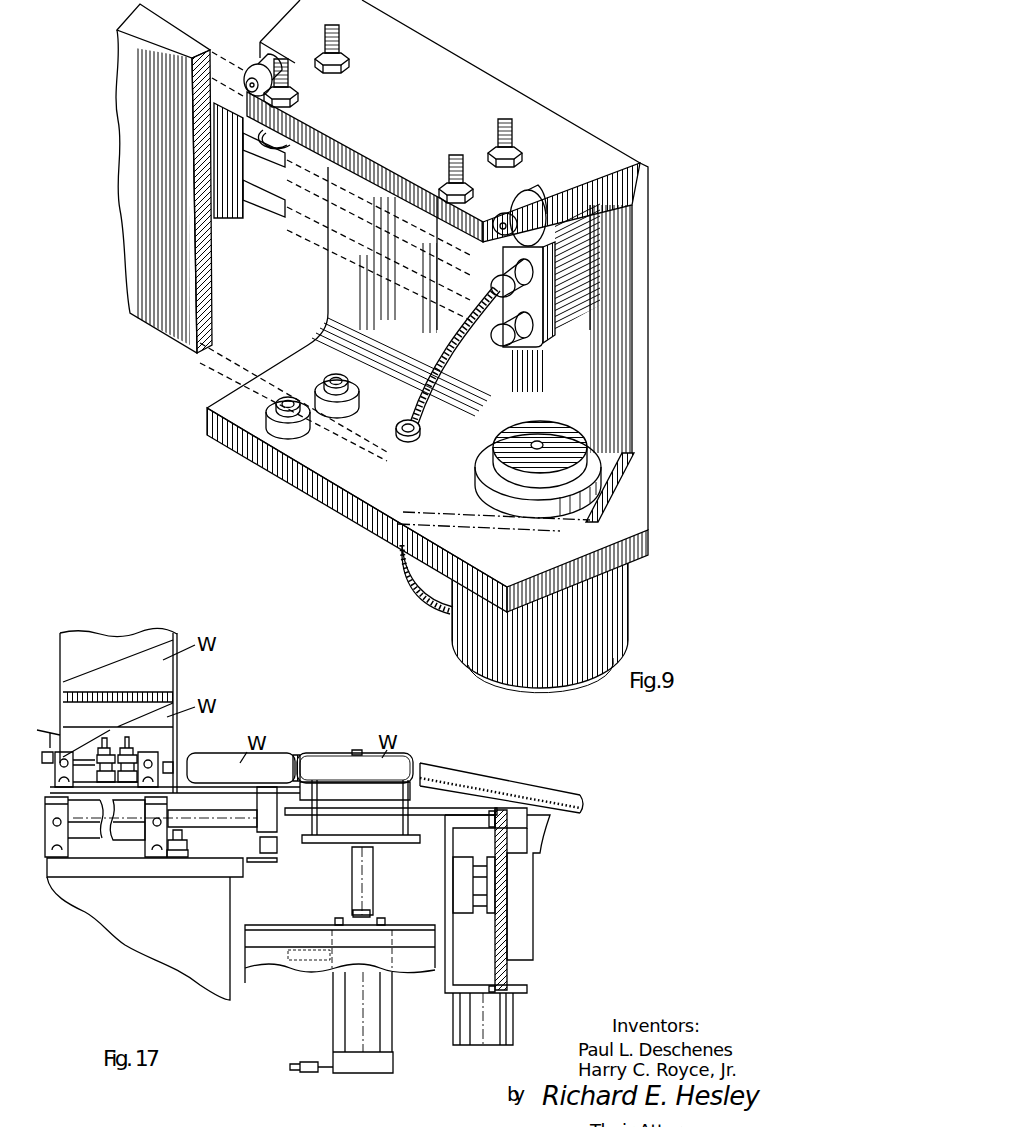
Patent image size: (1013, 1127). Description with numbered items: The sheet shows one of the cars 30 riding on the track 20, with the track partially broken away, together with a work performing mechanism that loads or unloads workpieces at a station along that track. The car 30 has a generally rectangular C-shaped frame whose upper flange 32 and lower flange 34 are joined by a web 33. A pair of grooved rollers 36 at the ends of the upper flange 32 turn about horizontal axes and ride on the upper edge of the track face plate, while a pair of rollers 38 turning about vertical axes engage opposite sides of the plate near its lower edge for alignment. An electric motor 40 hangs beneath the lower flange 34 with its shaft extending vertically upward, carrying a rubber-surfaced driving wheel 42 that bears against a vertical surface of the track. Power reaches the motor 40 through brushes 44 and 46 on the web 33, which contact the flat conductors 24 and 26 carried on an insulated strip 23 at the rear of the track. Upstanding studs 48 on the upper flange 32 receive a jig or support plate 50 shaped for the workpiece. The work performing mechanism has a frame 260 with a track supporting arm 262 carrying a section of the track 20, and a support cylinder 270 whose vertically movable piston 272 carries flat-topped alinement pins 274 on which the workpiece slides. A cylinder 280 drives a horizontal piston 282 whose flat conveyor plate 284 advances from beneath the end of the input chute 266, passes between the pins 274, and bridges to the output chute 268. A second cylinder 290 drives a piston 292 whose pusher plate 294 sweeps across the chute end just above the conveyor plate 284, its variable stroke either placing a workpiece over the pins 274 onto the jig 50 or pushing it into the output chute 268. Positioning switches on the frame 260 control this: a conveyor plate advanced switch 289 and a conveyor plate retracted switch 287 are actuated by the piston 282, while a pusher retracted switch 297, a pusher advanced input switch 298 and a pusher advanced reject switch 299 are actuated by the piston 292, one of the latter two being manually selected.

In FIG. 9, the track 20 is at (155, 343).
In FIG. 17, the track 20 is at (510, 972).
In FIG. 9, the insulated strip 23 is at (227, 200).
In FIG. 9, the flat conductor 24 is at (276, 165).
In FIG. 9, the flat conductor 26 is at (274, 214).
In FIG. 9, the car 30 is at (459, 306).
In FIG. 17, the car 30 is at (517, 820).
In FIG. 9, the upper flange 32 is at (613, 160).
In FIG. 9, the web 33 is at (641, 403).
In FIG. 9, the lower flange 34 is at (388, 498).
In FIG. 9, the grooved roller 36 is at (248, 62).
In FIG. 9, the roller 38 is at (304, 437).
In FIG. 9, the electric motor 40 is at (610, 597).
In FIG. 9, the driving wheel 42 is at (492, 491).
In FIG. 9, the brush 44 is at (493, 293).
In FIG. 9, the brush 46 is at (523, 343).
In FIG. 9, the stud 48 is at (497, 145).
In FIG. 17, the support plate 50 is at (433, 808).
In FIG. 17, the frame 260 is at (199, 958).
In FIG. 17, the track supporting arm 262 is at (540, 895).
In FIG. 17, the input chute 266 is at (182, 680).
In FIG. 17, the output chute 268 is at (507, 785).
In FIG. 17, the support cylinder 270 is at (353, 1032).
In FIG. 17, the piston 272 is at (357, 917).
In FIG. 17, the alinement pin 274 is at (323, 822).
In FIG. 17, the cylinder 280 is at (130, 825).
In FIG. 17, the piston 282 is at (195, 822).
In FIG. 17, the conveyor plate 284 is at (342, 782).
In FIG. 17, the conveyor plate retracted switch 287 is at (177, 860).
In FIG. 17, the conveyor plate advanced switch 289 is at (278, 850).
In FIG. 17, the cylinder 290 is at (80, 767).
In FIG. 17, the piston 292 is at (163, 775).
In FIG. 17, the pusher plate 294 is at (177, 765).
In FIG. 17, the pusher retracted switch 297 is at (43, 753).
In FIG. 17, the pusher advanced (input) switch 298 is at (100, 753).
In FIG. 17, the pusher advanced (reject) switch 299 is at (131, 741).